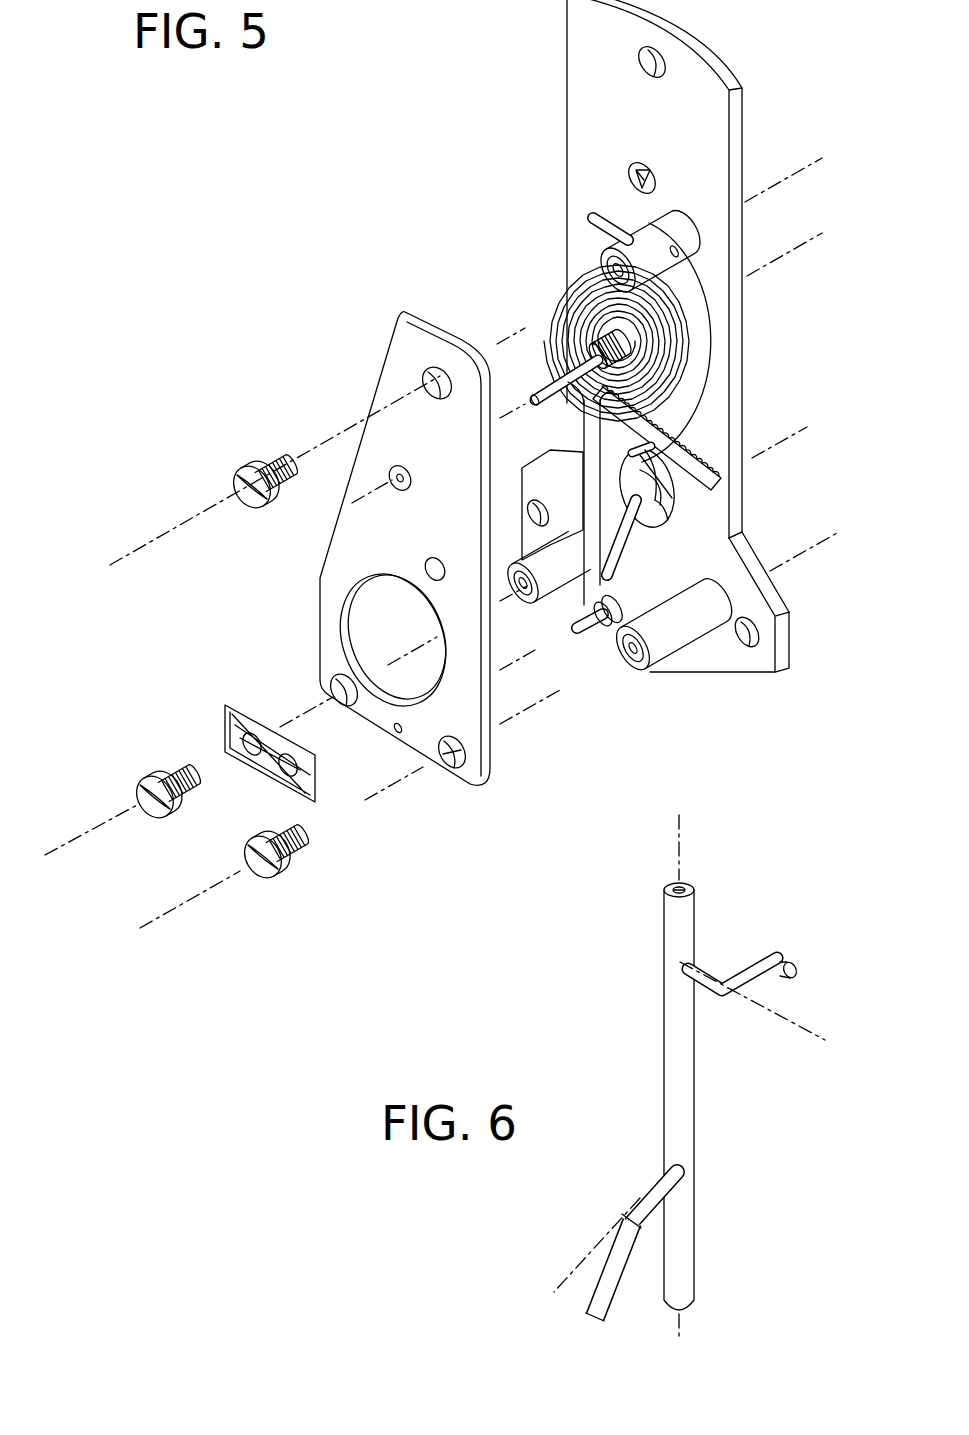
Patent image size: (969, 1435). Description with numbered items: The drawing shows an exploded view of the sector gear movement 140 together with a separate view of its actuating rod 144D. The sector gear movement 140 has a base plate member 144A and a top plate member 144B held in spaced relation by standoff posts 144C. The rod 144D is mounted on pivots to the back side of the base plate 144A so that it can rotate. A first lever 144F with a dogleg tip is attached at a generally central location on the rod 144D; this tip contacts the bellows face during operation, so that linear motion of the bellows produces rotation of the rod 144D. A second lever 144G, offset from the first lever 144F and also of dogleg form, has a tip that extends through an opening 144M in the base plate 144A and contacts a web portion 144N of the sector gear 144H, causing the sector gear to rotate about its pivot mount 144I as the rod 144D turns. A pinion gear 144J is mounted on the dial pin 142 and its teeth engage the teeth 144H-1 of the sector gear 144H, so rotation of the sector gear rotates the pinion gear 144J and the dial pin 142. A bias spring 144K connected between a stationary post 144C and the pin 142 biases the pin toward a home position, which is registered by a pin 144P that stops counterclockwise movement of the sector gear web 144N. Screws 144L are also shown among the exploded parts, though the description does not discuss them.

In FIG. 5, the sector gear movement 140 is at (372, 264).
In FIG. 5, the dial pin 142 is at (548, 345).
In FIG. 5, the base plate member 144A is at (587, 34).
In FIG. 5, the top plate member 144B is at (410, 352).
In FIG. 5, the standoff posts 144C is at (655, 240).
In FIG. 5, the rod 144D is at (590, 493).
In FIG. 6, the rod 144D is at (683, 1117).
In FIG. 6, the first lever 144F is at (790, 958).
In FIG. 5, the second lever 144G is at (622, 543).
In FIG. 6, the second lever 144G is at (610, 1262).
In FIG. 5, the sector gear 144H is at (692, 392).
In FIG. 5, the teeth of the sector gear 144H-1 is at (698, 423).
In FIG. 5, the pivot mount 144I is at (607, 647).
In FIG. 5, the pinion gear 144J is at (592, 318).
In FIG. 5, the bias spring 144K is at (642, 325).
In FIG. 5, the screw 144L is at (245, 470).
In FIG. 5, the opening 144M is at (673, 512).
In FIG. 5, the web portion 144N is at (593, 548).
In FIG. 5, the pin 144P is at (561, 467).